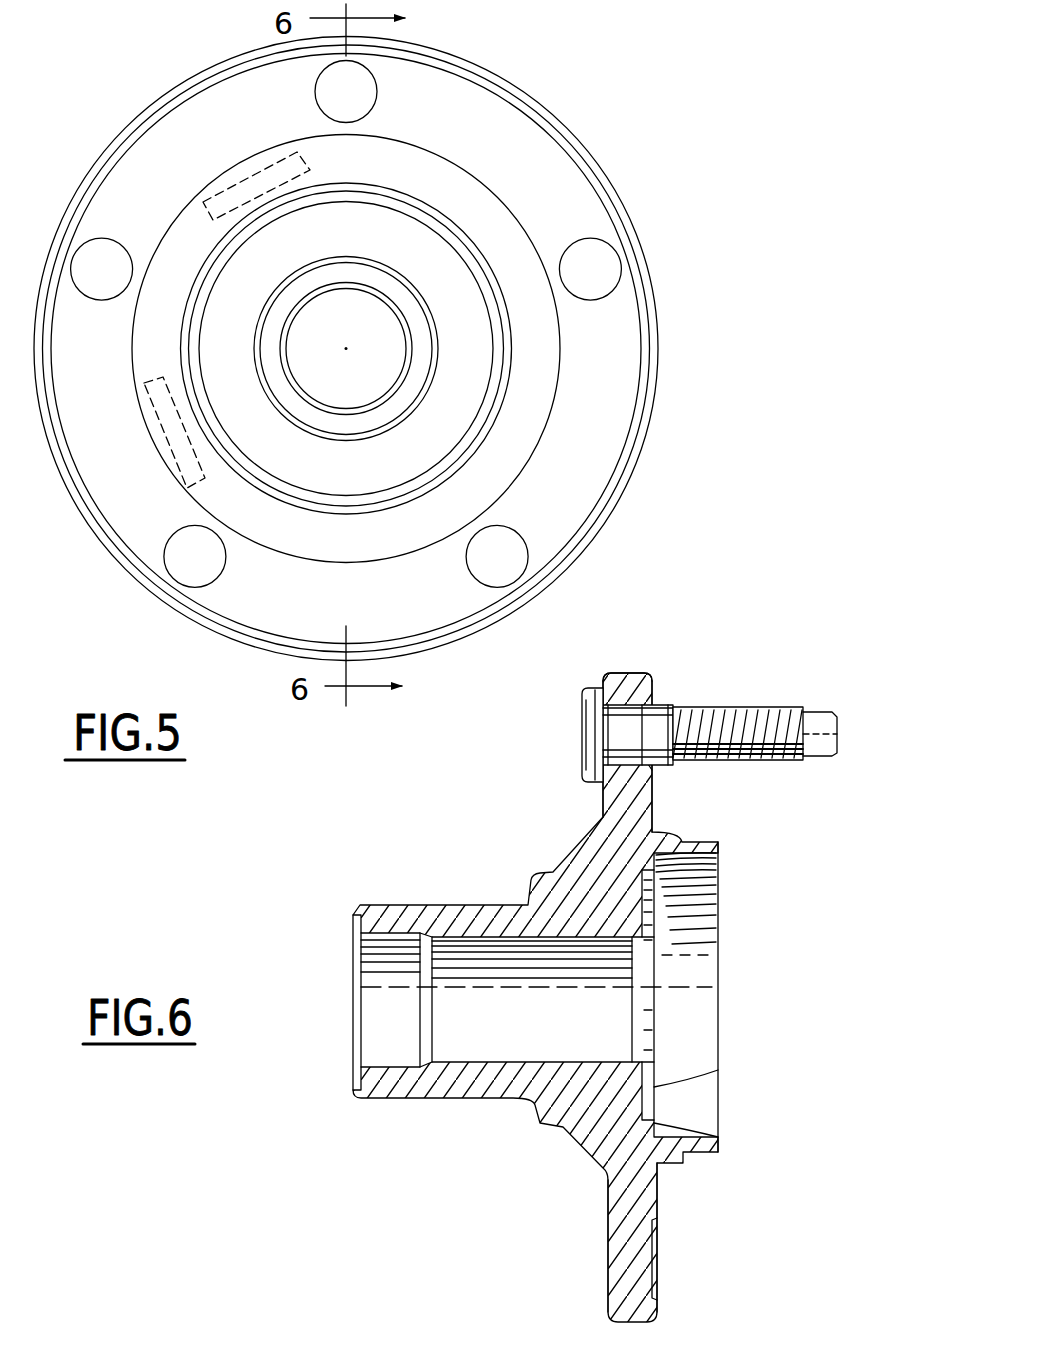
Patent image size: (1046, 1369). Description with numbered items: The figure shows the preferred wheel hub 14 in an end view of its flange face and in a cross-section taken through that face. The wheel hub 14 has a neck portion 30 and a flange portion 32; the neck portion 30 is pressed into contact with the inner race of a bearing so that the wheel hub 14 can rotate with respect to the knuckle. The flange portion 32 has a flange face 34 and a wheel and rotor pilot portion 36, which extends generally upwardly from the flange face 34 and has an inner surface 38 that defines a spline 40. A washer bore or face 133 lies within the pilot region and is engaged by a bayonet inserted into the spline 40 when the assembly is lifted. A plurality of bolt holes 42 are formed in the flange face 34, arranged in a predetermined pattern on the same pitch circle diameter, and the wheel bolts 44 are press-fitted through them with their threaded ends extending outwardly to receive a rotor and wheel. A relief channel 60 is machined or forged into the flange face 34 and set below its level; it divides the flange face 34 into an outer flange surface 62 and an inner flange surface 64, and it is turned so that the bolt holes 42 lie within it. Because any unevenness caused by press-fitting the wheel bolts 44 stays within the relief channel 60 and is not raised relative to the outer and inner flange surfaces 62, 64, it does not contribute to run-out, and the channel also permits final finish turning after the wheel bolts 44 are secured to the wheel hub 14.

In FIG. 5, the wheel hub 14 is at (600, 116).
In FIG. 6, the neck portion 30 is at (447, 905).
In FIG. 5, the flange portion 32 is at (607, 173).
In FIG. 6, the flange portion 32 is at (603, 797).
In FIG. 5, the flange face 34 is at (548, 352).
In FIG. 6, the flange face 34 is at (658, 1200).
In FIG. 5, the wheel and rotor pilot portion 36 is at (430, 204).
In FIG. 6, the wheel and rotor pilot portion 36 is at (722, 838).
In FIG. 5, the inner surface 38 is at (440, 241).
In FIG. 6, the inner surface 38 is at (700, 865).
In FIG. 6, the spline 40 is at (662, 977).
In FIG. 5, the bolt holes 42 is at (600, 290).
In FIG. 6, the bolt holes 42 is at (620, 702).
In FIG. 6, the wheel bolts 44 is at (760, 694).
In FIG. 5, the relief channel 60 is at (225, 90).
In FIG. 6, the relief channel 60 is at (657, 1255).
In FIG. 5, the outer flange surface 62 is at (173, 100).
In FIG. 6, the outer flange surface 62 is at (655, 680).
In FIG. 5, the inner flange surface 64 is at (408, 152).
In FIG. 6, the inner flange surface 64 is at (655, 805).
In FIG. 5, the washer bore or face 133 is at (392, 477).
In FIG. 6, the washer bore or face 133 is at (654, 1087).